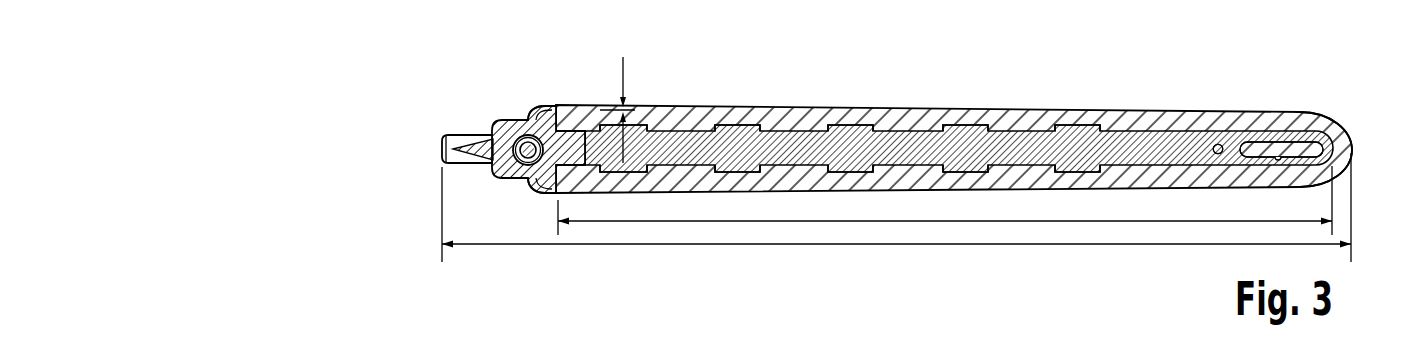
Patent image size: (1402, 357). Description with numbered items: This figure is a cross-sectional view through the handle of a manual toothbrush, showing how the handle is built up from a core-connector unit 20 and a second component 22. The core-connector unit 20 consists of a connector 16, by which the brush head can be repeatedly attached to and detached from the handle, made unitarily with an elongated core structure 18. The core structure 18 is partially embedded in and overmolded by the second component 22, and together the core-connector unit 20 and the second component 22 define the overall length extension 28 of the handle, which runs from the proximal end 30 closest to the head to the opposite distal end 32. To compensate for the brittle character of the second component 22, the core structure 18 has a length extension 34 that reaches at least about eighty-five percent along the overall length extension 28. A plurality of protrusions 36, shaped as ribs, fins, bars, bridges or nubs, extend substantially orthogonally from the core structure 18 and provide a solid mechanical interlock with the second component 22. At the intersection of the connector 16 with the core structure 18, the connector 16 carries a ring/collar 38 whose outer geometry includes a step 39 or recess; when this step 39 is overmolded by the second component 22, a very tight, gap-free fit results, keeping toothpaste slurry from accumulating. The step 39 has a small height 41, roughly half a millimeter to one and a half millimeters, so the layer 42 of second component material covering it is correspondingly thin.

The connector 16 is at (468, 180).
The core structure 18 is at (907, 147).
The core-connector unit 20 is at (1132, 143).
The second component 22 is at (1035, 122).
The overall length extension 28 is at (928, 244).
The proximal end 30 is at (430, 152).
The distal end 32 is at (1354, 146).
The length extension 34 is at (820, 221).
The protrusions 36 is at (853, 128).
The ring/collar 38 is at (540, 118).
The step 39 is at (547, 104).
The height 41 is at (628, 100).
The layer 42 is at (566, 106).